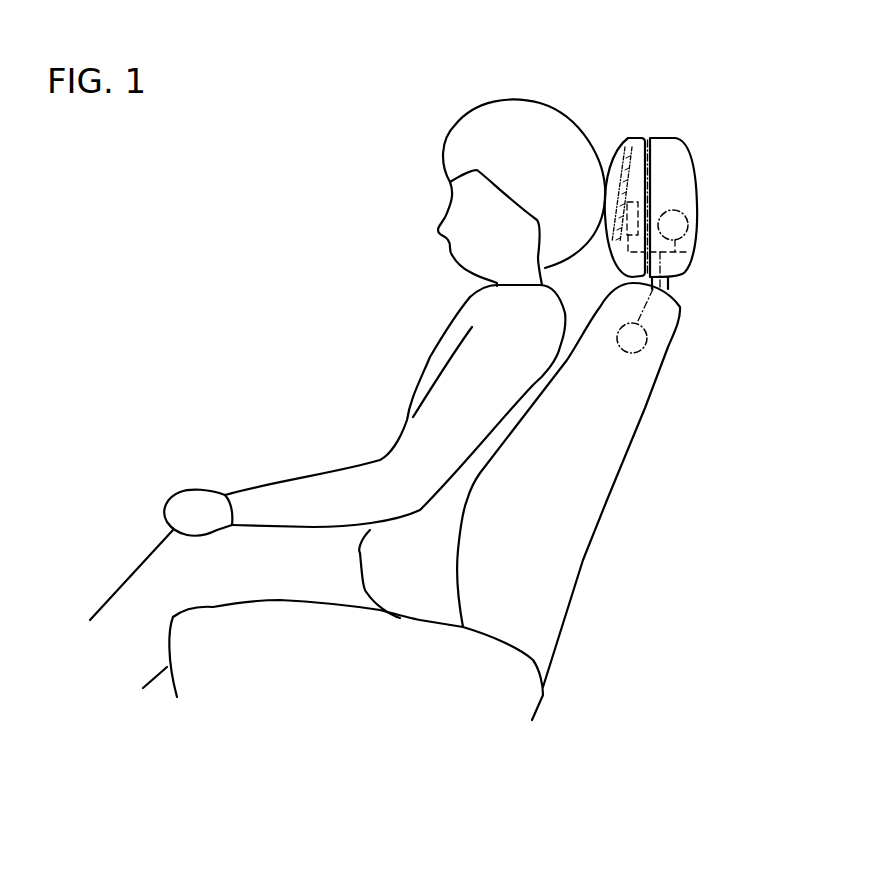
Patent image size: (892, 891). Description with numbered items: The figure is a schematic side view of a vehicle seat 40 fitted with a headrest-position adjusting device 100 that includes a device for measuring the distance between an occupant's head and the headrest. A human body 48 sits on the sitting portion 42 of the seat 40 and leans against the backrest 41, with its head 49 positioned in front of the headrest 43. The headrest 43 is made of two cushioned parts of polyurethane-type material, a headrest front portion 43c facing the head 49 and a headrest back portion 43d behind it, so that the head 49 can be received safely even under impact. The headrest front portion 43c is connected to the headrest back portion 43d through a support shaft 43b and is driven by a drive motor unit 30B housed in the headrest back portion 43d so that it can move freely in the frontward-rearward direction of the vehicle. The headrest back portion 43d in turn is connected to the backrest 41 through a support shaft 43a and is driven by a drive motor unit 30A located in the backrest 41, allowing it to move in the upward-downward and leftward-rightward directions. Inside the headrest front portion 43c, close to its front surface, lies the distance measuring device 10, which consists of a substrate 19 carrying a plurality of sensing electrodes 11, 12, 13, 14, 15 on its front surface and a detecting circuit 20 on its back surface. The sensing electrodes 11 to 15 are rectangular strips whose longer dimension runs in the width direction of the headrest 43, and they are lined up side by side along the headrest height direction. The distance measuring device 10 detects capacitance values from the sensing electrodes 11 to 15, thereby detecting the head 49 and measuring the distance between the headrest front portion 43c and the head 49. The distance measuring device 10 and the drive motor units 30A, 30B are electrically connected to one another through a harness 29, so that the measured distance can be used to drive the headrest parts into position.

The headrest-position adjusting device 100 is at (786, 22).
The distance measuring device 10 is at (638, 174).
The sensing electrode 11 is at (614, 240).
The sensing electrode 12 is at (627, 214).
The sensing electrode 13 is at (620, 198).
The sensing electrode 14 is at (628, 175).
The sensing electrode 15 is at (625, 152).
The substrate 19 is at (628, 142).
The detecting circuit 20 is at (638, 201).
The harness 29 is at (685, 250).
The drive motor unit 30A is at (648, 338).
The drive motor unit 30B is at (692, 224).
The seat 40 is at (670, 441).
The backrest 41 is at (607, 500).
The sitting portion 42 is at (375, 688).
The headrest 43 is at (705, 208).
The support shaft 43a is at (672, 283).
The support shaft 43b is at (647, 137).
The headrest front portion 43c is at (610, 135).
The headrest back portion 43d is at (682, 131).
The human body 48 is at (430, 357).
The head 49 is at (518, 100).